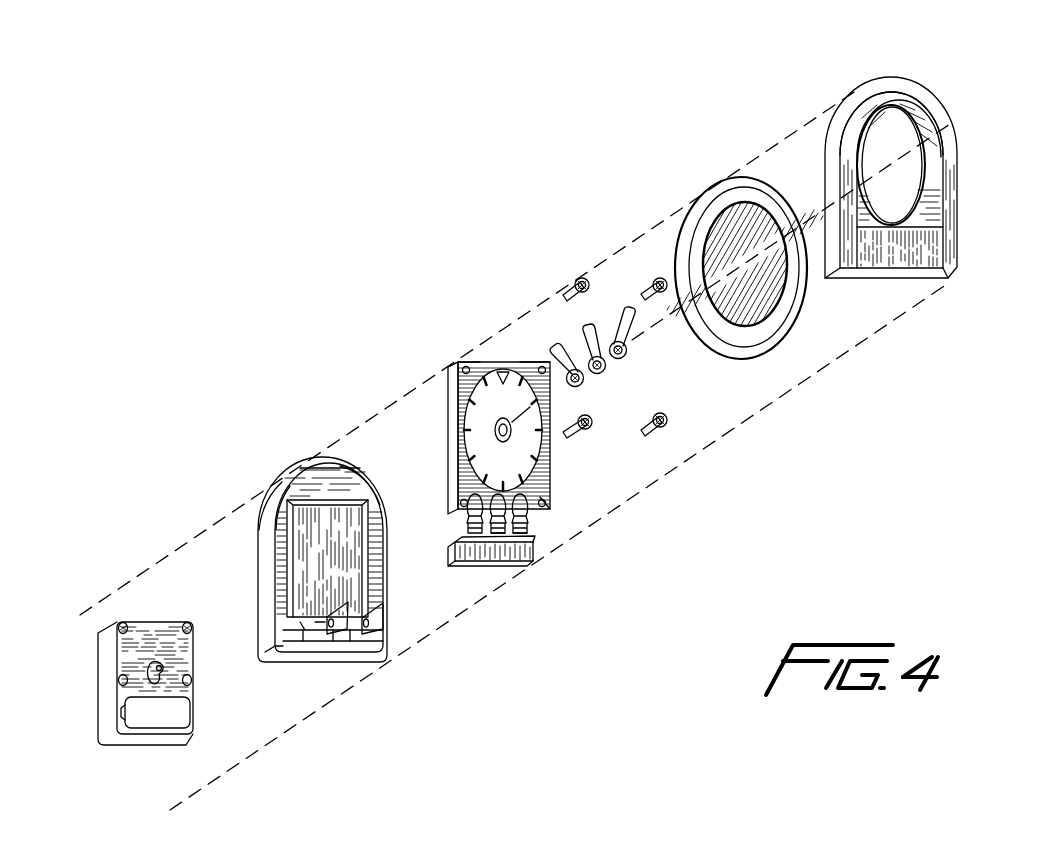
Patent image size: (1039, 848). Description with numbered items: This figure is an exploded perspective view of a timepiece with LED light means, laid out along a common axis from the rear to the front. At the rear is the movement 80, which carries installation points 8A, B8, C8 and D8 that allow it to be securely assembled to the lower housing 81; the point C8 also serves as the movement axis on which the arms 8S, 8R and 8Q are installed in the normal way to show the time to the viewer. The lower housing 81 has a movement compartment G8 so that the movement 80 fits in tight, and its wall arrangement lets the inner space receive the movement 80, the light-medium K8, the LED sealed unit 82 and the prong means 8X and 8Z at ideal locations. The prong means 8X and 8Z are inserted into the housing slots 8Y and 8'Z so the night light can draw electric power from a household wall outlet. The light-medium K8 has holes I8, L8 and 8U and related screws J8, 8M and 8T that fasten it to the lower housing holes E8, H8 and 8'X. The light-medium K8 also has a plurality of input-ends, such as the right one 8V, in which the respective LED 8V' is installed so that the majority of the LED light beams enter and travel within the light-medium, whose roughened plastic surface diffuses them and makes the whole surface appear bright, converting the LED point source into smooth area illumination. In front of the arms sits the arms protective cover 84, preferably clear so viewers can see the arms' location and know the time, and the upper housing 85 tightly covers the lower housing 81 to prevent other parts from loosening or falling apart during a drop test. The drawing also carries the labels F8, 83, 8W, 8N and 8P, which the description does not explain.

The movement 80 is at (112, 742).
The installation point 8A is at (163, 717).
The installation point B8 is at (124, 622).
The installation point (movement axis) C8 is at (156, 664).
The installation point D8 is at (190, 622).
The lower housing 81 is at (288, 660).
The lower housing hole 8'X is at (247, 686).
The prong means 8X is at (385, 645).
The housing slot 8Y is at (348, 644).
The prong means 8Z is at (309, 640).
The housing slot 8'Z is at (338, 725).
The lower housing hole E8 is at (282, 481).
The inner wall F8 is at (287, 478).
The movement compartment G8 is at (333, 492).
The lower housing hole H8 is at (360, 484).
The dial plate 83 is at (472, 362).
The hole I8 is at (455, 365).
The light-medium K8 is at (463, 362).
The hole L8 is at (530, 362).
The hole 8U is at (552, 510).
The input-end 8V is at (538, 548).
The LED 8V' is at (544, 595).
The bulb base 8W is at (497, 535).
The LED sealed unit 82 is at (472, 572).
The screw J8 is at (563, 295).
The screw 8M is at (644, 296).
The screw 8T is at (648, 437).
The arm 8S is at (578, 388).
The arm 8R is at (602, 372).
The arm 8Q is at (627, 353).
The arms protective cover 84 is at (748, 182).
The upper housing 85 is at (942, 97).
The inner arch 8N is at (903, 102).
The window opening 8P is at (900, 182).